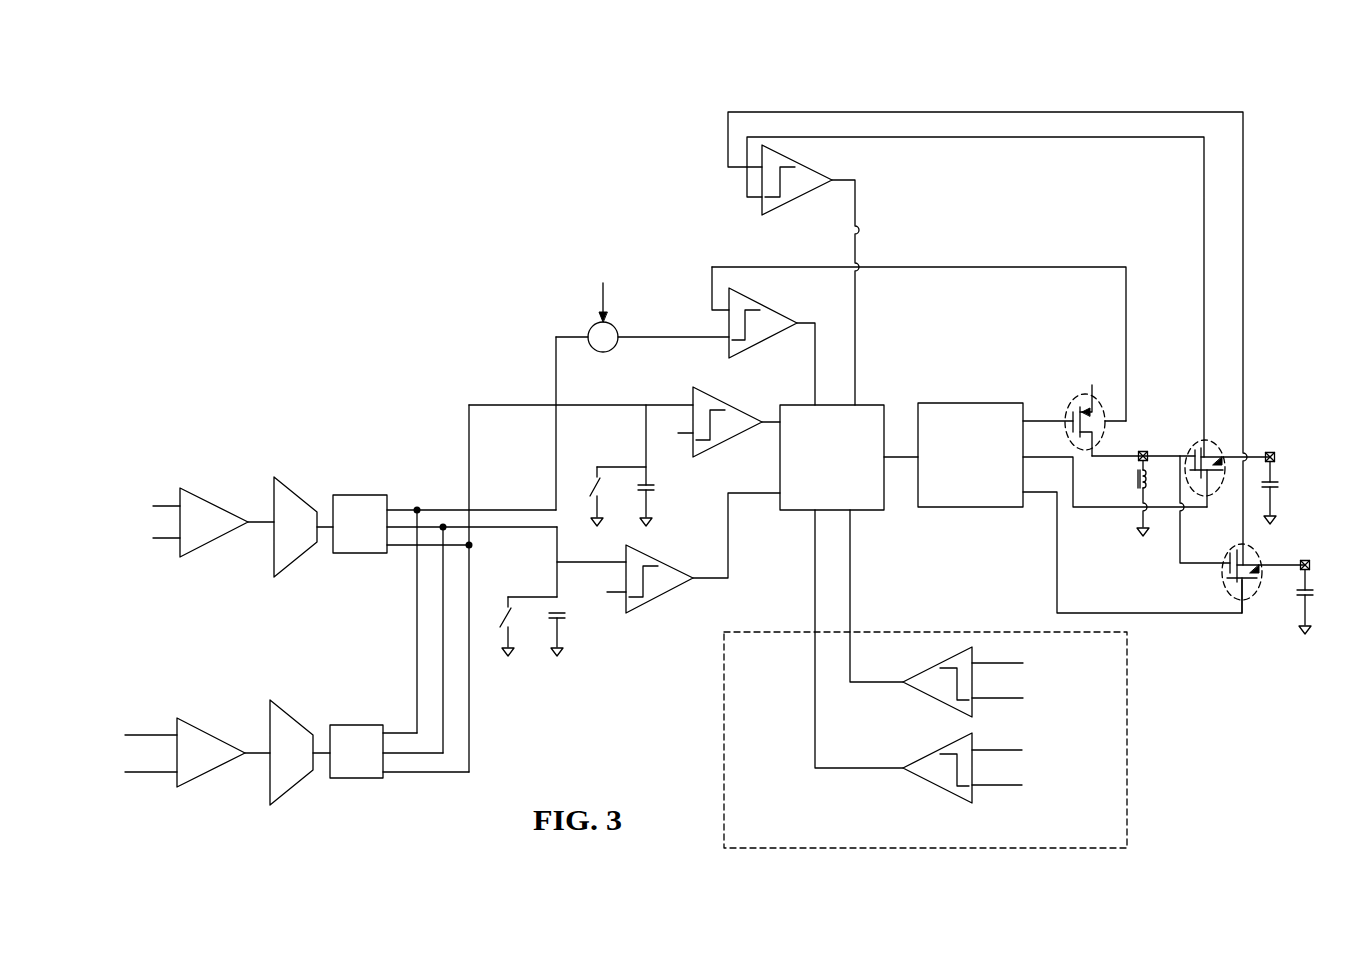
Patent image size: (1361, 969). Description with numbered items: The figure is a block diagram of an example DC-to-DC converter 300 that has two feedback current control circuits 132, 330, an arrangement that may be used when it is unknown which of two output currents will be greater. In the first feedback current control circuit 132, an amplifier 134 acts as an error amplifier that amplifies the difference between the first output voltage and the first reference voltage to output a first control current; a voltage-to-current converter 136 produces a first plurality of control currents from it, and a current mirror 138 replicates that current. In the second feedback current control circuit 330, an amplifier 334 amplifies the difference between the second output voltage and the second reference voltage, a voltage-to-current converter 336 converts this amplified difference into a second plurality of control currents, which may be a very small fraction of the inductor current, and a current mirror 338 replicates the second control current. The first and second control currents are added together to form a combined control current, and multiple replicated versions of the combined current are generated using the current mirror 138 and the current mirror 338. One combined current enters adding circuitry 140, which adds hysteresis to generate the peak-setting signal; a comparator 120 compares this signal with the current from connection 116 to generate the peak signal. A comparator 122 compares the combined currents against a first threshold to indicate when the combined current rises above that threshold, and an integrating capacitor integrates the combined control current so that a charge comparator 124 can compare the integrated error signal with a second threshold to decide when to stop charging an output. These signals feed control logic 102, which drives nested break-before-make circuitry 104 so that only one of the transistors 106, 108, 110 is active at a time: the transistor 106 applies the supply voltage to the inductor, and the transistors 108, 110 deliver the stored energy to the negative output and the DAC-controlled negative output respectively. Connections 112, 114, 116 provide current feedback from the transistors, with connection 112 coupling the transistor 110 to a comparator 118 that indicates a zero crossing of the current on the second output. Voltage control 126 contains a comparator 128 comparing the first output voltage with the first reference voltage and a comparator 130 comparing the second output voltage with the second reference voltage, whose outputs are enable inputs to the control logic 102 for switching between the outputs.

The DC-to-DC converter 300 is at (146, 109).
The control logic 102 is at (870, 403).
The nested break-before-make circuitry 104 is at (952, 402).
The transistor 106 is at (1068, 400).
The transistor 108 is at (1197, 443).
The transistor 110 is at (1238, 542).
The connection 112 is at (953, 108).
The connection 114 is at (990, 138).
The connection 116 is at (950, 265).
The comparator 118 is at (803, 195).
The peak current comparator 120 is at (770, 338).
The comparator 122 is at (743, 432).
The charge comparator 124 is at (665, 595).
The voltage control 126 is at (938, 632).
The comparator 128 is at (923, 693).
The comparator 130 is at (902, 768).
The feedback current control circuit 132 is at (222, 613).
The amplifier 134 is at (205, 548).
The voltage-to-current converter 136 is at (305, 553).
The current mirror 138 is at (357, 493).
The adding circuitry 140 is at (617, 348).
The feedback current control circuit 330 is at (320, 674).
The amplifier 334 is at (192, 778).
The voltage-to-current converter 336 is at (302, 783).
The current mirror 338 is at (340, 723).